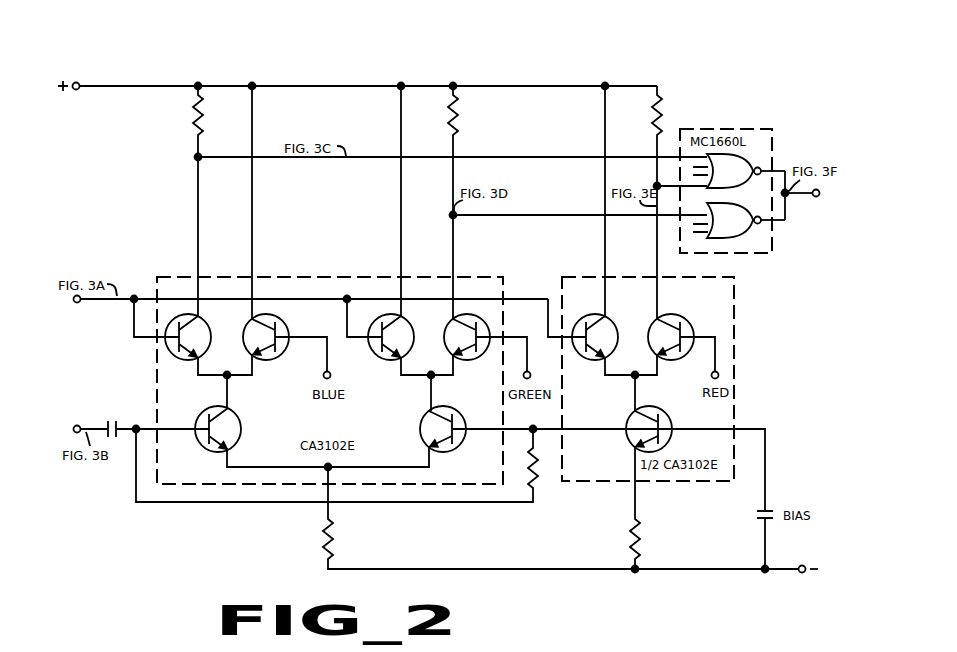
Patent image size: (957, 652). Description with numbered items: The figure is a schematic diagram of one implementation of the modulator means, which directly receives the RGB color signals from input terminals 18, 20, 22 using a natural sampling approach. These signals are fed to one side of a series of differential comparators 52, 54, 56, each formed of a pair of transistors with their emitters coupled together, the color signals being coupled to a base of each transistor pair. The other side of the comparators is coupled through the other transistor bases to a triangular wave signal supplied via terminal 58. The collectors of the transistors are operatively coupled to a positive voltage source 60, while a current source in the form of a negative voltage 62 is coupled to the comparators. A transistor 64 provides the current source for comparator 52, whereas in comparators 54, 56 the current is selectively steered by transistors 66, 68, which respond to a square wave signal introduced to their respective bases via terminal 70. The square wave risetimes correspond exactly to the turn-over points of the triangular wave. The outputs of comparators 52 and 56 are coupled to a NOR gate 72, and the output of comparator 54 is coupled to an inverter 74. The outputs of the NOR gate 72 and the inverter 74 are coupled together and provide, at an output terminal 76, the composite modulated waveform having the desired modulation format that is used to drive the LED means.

The positive voltage source 60 is at (77, 82).
The terminal 58 is at (77, 303).
The terminal 70 is at (77, 425).
The transistor 68 is at (209, 408).
The differential comparator 56 is at (264, 380).
The input terminal 22 is at (330, 372).
The differential comparator 54 is at (402, 385).
The transistor 66 is at (448, 408).
The input terminal 20 is at (530, 372).
The differential comparator 52 is at (612, 384).
The transistor 64 is at (651, 408).
The input terminal 18 is at (712, 375).
The NOR gate 72 is at (752, 156).
The inverter 74 is at (742, 243).
The output terminal 76 is at (816, 197).
The negative voltage 62 is at (803, 573).